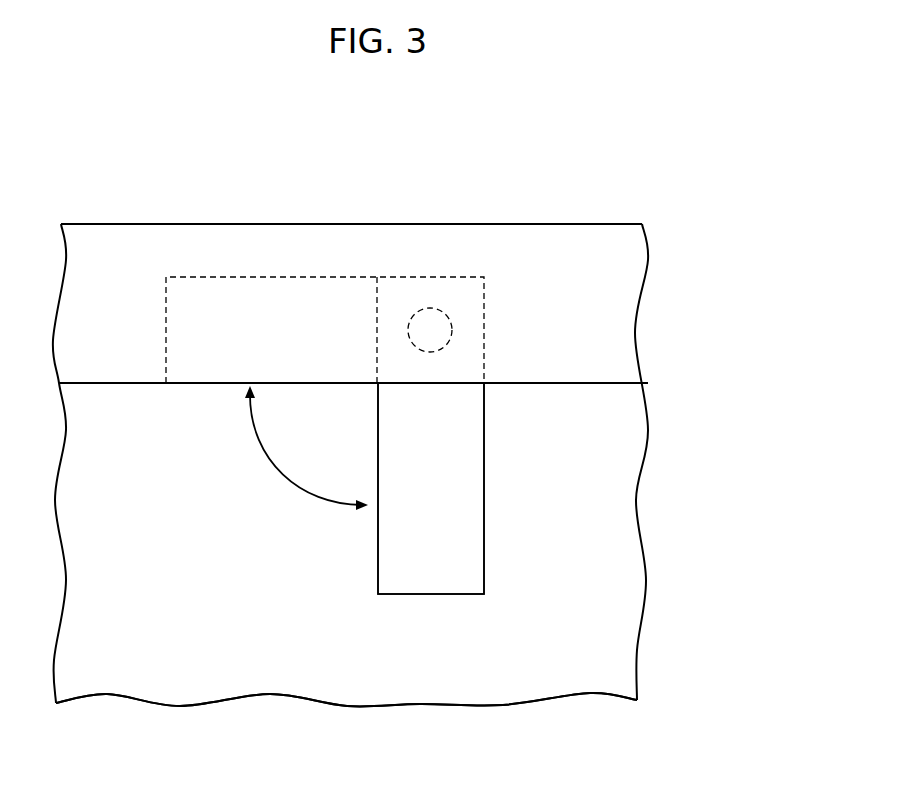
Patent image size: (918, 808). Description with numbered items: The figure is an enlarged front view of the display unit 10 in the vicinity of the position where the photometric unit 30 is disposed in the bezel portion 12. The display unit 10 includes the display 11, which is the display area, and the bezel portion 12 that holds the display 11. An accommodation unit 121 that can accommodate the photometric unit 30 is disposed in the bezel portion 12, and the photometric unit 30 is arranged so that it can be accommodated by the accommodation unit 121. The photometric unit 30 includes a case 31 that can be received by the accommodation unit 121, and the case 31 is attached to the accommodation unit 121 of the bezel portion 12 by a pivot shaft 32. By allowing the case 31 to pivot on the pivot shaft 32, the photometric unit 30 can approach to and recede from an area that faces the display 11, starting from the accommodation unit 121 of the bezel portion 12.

The display unit 10 is at (590, 178).
The display 11 is at (615, 413).
The bezel portion 12 is at (615, 328).
The accommodation unit 121 is at (258, 276).
The photometric unit 30 is at (510, 488).
The case 31 is at (452, 567).
The pivot shaft 32 is at (431, 307).